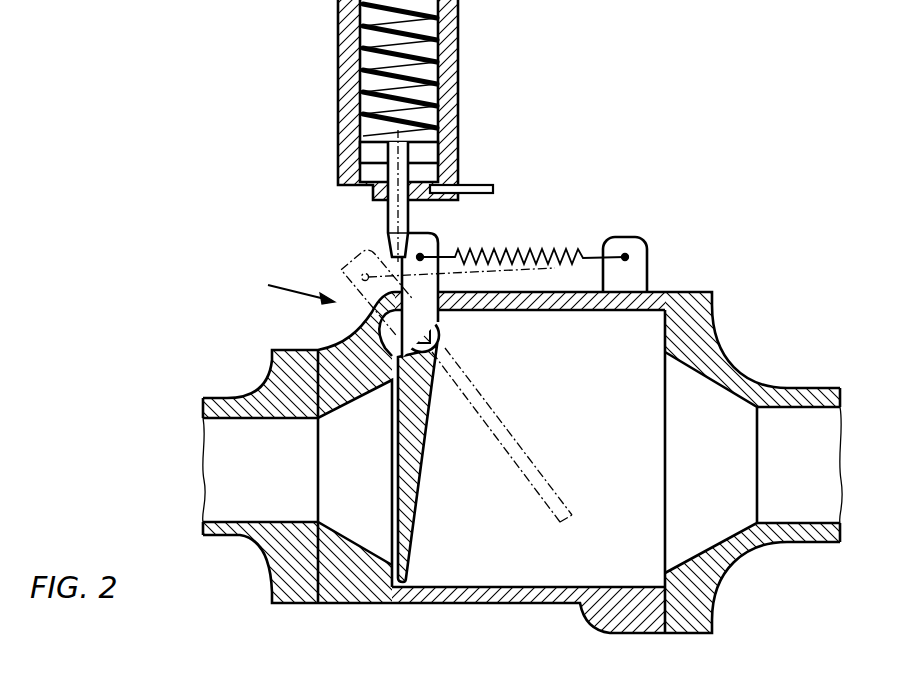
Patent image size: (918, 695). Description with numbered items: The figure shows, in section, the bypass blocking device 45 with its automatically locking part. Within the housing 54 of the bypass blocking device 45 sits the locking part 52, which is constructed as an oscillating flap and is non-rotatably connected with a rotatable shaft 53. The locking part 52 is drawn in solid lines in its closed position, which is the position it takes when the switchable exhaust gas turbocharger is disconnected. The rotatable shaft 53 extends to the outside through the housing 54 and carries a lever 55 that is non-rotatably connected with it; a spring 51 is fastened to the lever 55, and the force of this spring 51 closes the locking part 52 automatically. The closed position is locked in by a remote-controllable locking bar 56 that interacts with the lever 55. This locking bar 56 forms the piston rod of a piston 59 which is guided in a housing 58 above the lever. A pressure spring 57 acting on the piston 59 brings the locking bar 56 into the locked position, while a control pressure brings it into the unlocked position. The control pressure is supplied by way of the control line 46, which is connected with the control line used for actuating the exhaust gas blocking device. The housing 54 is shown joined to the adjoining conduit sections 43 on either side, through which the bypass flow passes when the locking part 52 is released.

The conduit / pipe 43 is at (230, 403).
The bypass blocking device 45 is at (301, 281).
The control line 46 is at (483, 183).
The spring 51 is at (533, 235).
The locking part 52 is at (425, 468).
The rotatable shaft 53 is at (440, 330).
The housing 54 is at (500, 603).
The lever 55 is at (437, 238).
The locking bar 56 is at (390, 243).
The pressure spring 57 is at (338, 72).
The housing 58 is at (448, 72).
The piston 59 is at (433, 152).